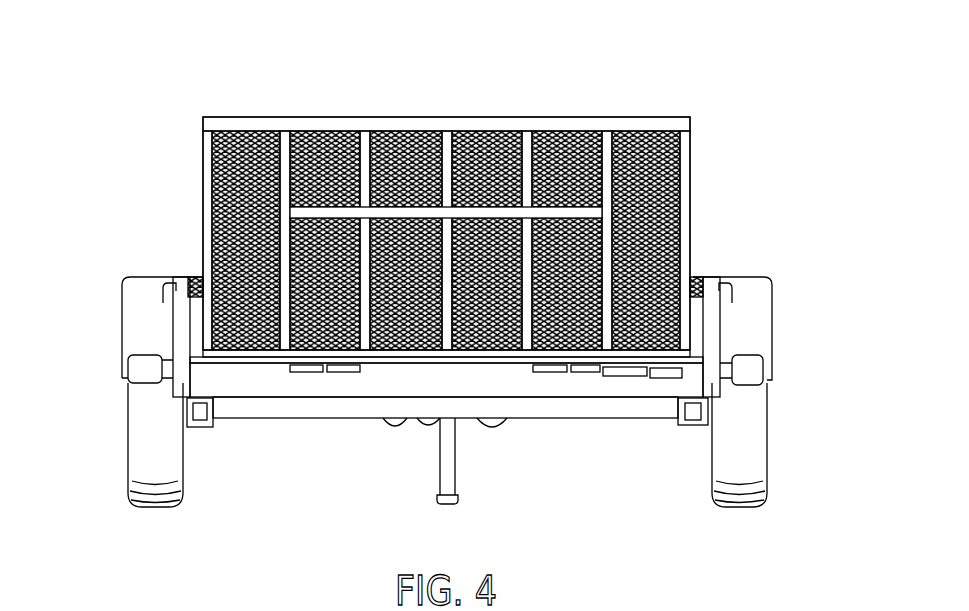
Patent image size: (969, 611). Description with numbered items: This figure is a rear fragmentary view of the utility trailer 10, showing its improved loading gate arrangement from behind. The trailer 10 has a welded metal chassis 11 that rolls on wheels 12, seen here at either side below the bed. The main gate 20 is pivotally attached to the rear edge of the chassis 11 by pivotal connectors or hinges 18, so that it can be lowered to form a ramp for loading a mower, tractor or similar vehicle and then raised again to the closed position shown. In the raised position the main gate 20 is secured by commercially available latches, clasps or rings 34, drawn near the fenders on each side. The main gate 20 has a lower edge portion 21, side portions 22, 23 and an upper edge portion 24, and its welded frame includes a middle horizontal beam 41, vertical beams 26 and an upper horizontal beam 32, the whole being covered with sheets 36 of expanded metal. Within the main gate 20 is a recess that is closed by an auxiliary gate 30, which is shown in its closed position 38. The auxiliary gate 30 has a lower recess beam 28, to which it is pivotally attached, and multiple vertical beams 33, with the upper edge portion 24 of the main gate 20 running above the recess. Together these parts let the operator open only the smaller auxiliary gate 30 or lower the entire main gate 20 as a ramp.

The utility trailer 10 is at (118, 40).
The chassis 11 is at (230, 418).
The wheels 12 is at (137, 440).
The pivotal connectors/hinges 18 is at (338, 373).
The main gate/ramp 20 is at (690, 200).
The lower edge portion 21 is at (645, 367).
The side portion 22 is at (203, 197).
The side portion 23 is at (690, 243).
The upper edge portion 24 is at (670, 118).
The vertical beams 26 is at (447, 340).
The lower recess beam 28 is at (562, 213).
The auxiliary gate 30 is at (320, 132).
The upper horizontal beam 32 is at (227, 127).
The vertical beams 33 is at (447, 132).
The latches, clasps or rings 34 is at (163, 292).
The sheets of expanded metal 36 is at (672, 163).
The closed position 38 is at (503, 80).
The middle horizontal beam 41 is at (300, 258).